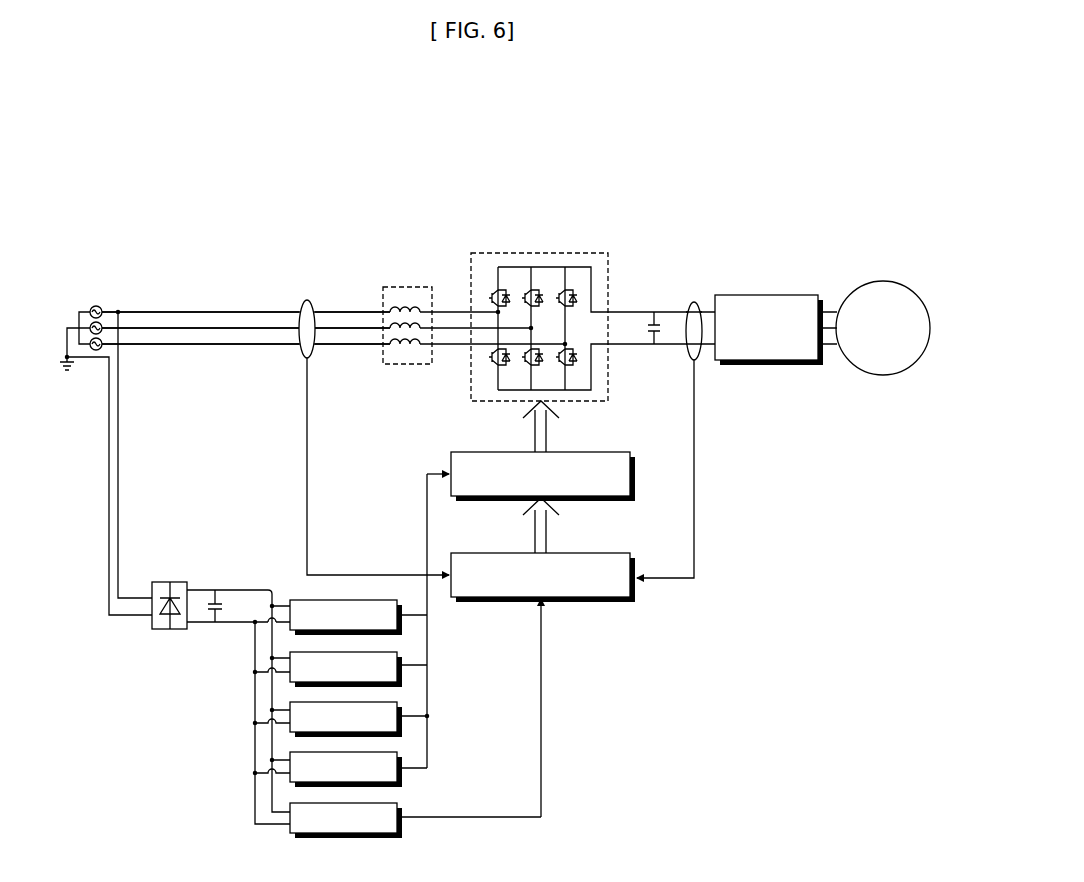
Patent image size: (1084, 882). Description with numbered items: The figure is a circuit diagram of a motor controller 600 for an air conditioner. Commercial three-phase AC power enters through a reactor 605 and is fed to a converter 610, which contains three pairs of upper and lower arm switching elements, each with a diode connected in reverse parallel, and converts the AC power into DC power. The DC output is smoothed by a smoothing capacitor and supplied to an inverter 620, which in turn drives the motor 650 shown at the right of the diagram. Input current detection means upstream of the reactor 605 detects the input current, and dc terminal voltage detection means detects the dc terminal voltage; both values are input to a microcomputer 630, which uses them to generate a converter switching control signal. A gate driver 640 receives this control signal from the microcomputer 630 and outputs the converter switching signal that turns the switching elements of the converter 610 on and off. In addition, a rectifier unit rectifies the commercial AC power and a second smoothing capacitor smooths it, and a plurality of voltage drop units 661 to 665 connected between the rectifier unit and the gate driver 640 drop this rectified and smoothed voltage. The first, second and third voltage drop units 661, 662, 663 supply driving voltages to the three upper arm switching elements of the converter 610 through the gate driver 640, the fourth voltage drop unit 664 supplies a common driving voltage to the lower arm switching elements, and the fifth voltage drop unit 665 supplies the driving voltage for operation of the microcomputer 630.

The motor controller 600 is at (366, 245).
The reactor 605 is at (415, 287).
The converter 610 is at (575, 253).
The inverter 620 is at (797, 295).
The microcomputer 630 is at (615, 553).
The gate driver 640 is at (615, 452).
The motor 650 is at (897, 282).
The first voltage drop unit 661 is at (292, 631).
The second voltage drop unit 662 is at (292, 682).
The third voltage drop unit 663 is at (292, 733).
The fourth voltage drop unit 664 is at (292, 784).
The fifth voltage drop unit 665 is at (292, 835).